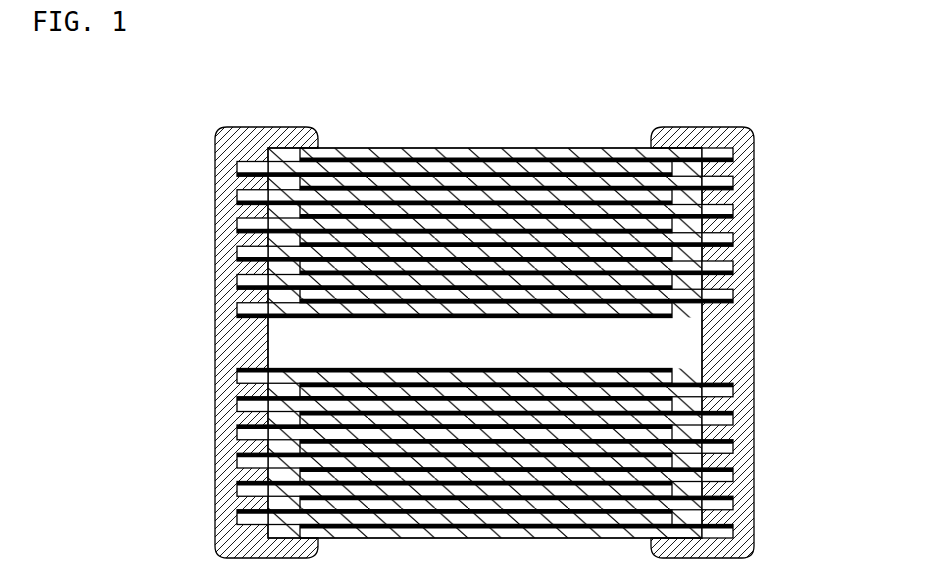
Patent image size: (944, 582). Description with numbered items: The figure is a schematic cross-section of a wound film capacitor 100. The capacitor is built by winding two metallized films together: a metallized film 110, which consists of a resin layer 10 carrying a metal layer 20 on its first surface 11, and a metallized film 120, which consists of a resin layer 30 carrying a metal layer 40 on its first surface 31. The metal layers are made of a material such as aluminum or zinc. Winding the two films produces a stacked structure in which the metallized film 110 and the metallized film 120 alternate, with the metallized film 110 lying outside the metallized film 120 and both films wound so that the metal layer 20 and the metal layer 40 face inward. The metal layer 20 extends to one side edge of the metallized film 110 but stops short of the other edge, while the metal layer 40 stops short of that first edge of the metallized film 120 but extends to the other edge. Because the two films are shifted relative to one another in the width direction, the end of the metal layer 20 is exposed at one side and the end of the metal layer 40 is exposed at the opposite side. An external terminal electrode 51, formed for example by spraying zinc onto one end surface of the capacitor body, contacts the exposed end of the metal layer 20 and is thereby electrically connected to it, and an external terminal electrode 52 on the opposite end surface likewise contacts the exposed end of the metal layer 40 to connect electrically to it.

The film capacitor 100 is at (190, 103).
The metallized film 110 is at (596, 234).
The resin layer 10 is at (728, 265).
The first surface 11 is at (705, 280).
The metal layer 20 is at (563, 304).
The metallized film 120 is at (375, 248).
The resin layer 30 is at (245, 279).
The first surface 31 is at (262, 294).
The metal layer 40 is at (240, 315).
The external terminal electrode 51 is at (752, 198).
The external terminal electrode 52 is at (224, 200).